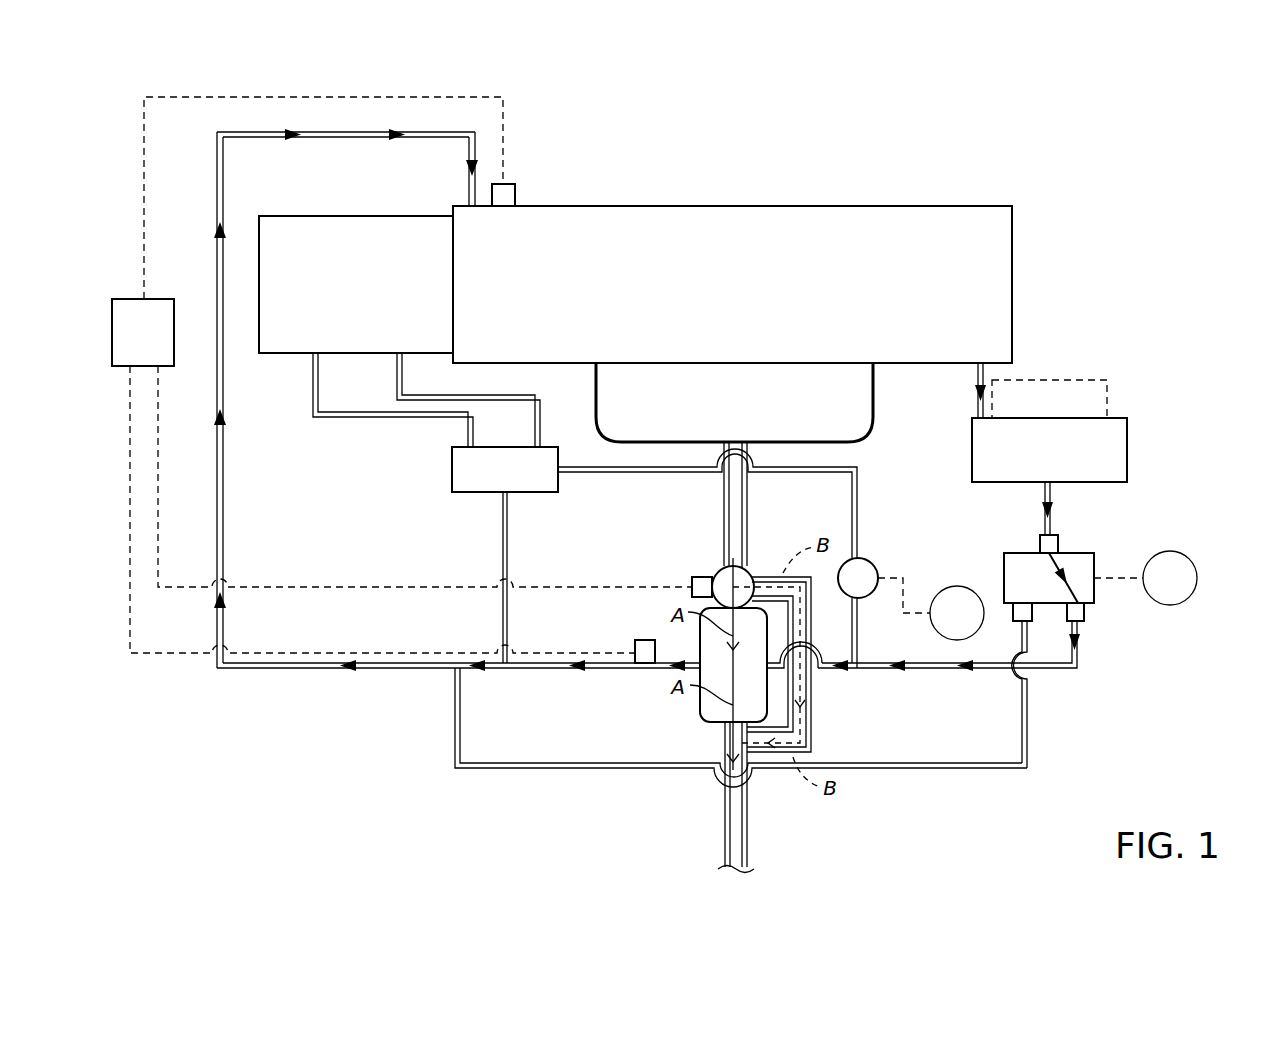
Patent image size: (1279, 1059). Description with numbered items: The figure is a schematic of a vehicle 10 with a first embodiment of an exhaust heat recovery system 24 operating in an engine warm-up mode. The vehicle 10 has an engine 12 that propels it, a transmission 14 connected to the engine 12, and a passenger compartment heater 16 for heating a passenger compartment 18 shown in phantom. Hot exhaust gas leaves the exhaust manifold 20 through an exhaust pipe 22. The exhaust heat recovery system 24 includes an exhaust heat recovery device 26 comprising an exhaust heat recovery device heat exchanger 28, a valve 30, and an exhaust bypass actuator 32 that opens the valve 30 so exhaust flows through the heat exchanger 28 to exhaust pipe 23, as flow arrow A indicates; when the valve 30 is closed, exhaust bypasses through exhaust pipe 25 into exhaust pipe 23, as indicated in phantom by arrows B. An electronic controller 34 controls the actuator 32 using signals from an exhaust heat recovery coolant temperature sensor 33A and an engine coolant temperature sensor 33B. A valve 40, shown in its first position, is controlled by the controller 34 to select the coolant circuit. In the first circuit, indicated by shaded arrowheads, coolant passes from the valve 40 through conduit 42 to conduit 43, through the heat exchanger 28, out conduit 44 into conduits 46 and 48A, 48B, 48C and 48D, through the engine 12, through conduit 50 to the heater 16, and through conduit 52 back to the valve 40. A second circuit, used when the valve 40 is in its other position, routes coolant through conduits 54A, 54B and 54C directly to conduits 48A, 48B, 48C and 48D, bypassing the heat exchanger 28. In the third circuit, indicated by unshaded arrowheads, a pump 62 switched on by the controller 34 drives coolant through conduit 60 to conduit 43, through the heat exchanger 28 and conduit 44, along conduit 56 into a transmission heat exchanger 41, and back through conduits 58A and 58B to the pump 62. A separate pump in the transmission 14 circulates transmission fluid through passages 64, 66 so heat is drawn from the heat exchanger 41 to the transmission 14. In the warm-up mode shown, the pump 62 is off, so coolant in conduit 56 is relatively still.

The vehicle 10 is at (768, 110).
The engine 12 is at (732, 284).
The transmission 14 is at (356, 284).
The passenger compartment heater 16 is at (1049, 450).
The passenger compartment 18 is at (1049, 399).
The exhaust manifold 20 is at (734, 402).
The exhaust pipe 22 is at (748, 510).
The exhaust pipe 23 is at (725, 838).
The exhaust heat recovery system 24 is at (1058, 347).
The exhaust pipe 25 is at (813, 710).
The exhaust heat recovery device 26 is at (674, 586).
The exhaust heat recovery device heat exchanger 28 is at (700, 645).
The valve 30 is at (750, 572).
The exhaust bypass actuator 32 is at (707, 577).
The exhaust heat recovery coolant temperature sensor 33A is at (635, 648).
The engine coolant temperature sensor 33B is at (515, 195).
The electronic controller 34 is at (654, 375).
The valve 40 is at (1095, 565).
The transmission heat exchanger 41 is at (505, 469).
The conduit 42 is at (1048, 668).
The conduit 43 is at (825, 672).
The conduit 44 is at (600, 668).
The conduit 46 is at (492, 670).
The conduit 48A is at (322, 668).
The conduit 48B is at (223, 510).
The conduit 48C is at (338, 137).
The conduit 48D is at (469, 150).
The conduit 50 is at (975, 378).
The conduit 52 is at (1043, 528).
The conduit 54A is at (1020, 738).
The conduit 54B is at (888, 770).
The conduit 54C is at (455, 738).
The conduit 56 is at (503, 562).
The conduit 58A is at (612, 473).
The conduit 58B is at (860, 488).
The conduit 60 is at (858, 612).
The pump 62 is at (870, 560).
The passage 64 is at (392, 418).
The passage 66 is at (470, 393).